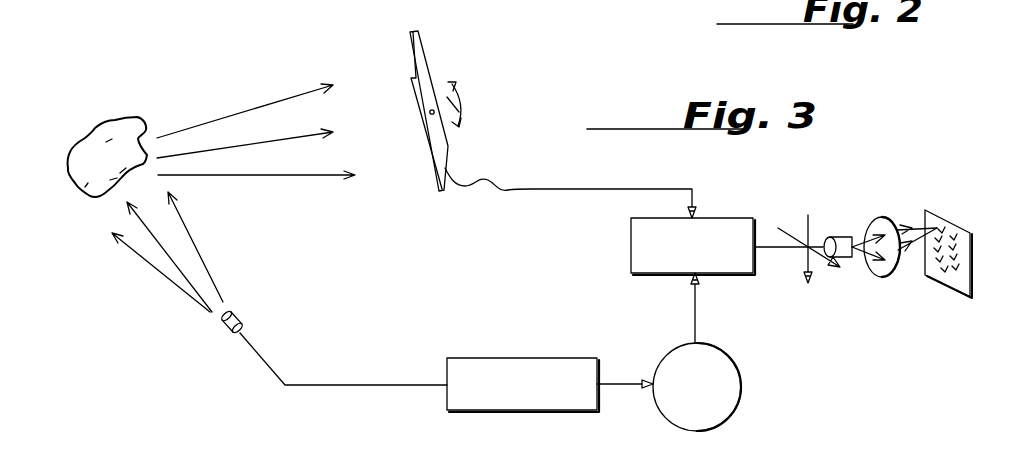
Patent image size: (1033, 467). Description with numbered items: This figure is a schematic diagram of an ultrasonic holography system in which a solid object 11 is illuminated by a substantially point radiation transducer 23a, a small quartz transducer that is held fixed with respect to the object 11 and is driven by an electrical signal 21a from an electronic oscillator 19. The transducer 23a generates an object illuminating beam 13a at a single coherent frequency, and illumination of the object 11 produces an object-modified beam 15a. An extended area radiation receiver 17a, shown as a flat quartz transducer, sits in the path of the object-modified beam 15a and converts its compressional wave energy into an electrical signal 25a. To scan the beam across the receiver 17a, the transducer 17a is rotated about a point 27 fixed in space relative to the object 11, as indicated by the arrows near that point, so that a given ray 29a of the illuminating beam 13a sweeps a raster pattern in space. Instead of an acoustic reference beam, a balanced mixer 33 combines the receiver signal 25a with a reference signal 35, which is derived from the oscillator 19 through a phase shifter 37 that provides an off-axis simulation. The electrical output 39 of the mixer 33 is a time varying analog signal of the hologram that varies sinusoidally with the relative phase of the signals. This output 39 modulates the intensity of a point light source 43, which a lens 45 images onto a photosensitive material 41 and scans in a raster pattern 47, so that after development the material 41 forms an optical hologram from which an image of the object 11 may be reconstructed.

The solid object 11 is at (115, 138).
The object-modified beam 15a is at (252, 108).
The object illuminating beam 13a is at (193, 243).
The ray 29a is at (170, 255).
The point radiation transducer 23a is at (241, 314).
The electrical signal 21a is at (355, 383).
The electronic oscillator 19 is at (513, 365).
The phase shifter 37 is at (727, 370).
The reference signal 35 is at (692, 318).
The balanced mixer 33 is at (720, 222).
The electrical signal 25a is at (567, 185).
The extended area radiation receiver 17a is at (422, 62).
The point 27 is at (435, 108).
The electrical output 39 is at (778, 250).
The point light source 43 is at (842, 240).
The lens 45 is at (882, 273).
The photosensitive material 41 is at (942, 223).
The raster pattern 47 is at (942, 270).